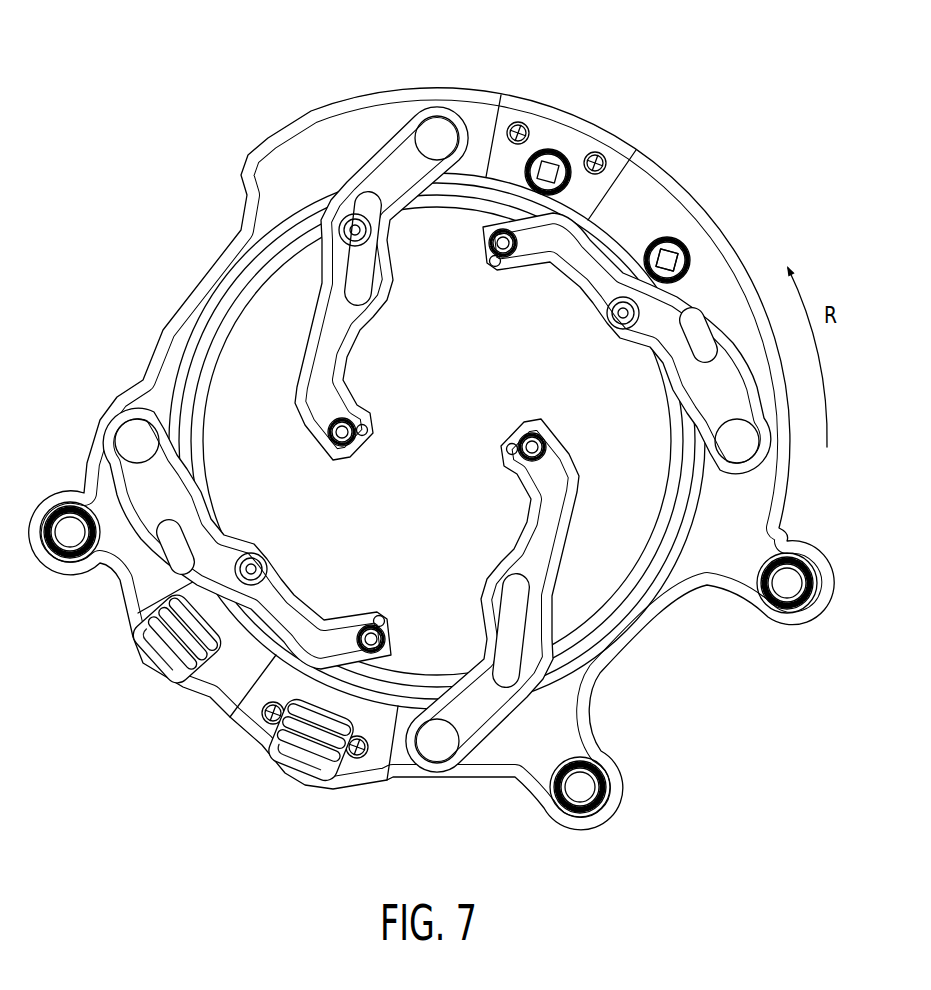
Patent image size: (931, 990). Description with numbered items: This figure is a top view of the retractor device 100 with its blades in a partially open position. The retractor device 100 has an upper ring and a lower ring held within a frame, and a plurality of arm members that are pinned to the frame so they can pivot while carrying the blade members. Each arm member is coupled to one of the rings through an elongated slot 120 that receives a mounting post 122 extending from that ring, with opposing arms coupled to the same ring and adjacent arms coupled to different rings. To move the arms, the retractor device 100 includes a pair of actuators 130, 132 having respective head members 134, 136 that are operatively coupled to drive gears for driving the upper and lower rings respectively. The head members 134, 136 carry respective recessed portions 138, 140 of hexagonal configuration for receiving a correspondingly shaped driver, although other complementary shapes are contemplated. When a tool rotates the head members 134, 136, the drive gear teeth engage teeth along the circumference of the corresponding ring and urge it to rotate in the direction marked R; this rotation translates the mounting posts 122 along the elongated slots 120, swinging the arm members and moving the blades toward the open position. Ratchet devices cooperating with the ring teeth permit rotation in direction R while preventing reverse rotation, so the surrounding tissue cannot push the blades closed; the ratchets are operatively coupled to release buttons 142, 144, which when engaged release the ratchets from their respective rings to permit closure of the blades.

The retractor device 100 is at (152, 73).
The elongated slot 120 is at (343, 273).
The mounting post 122 is at (357, 226).
The actuator 130 is at (558, 142).
The actuator 132 is at (697, 255).
The head member 134 is at (567, 158).
The head member 136 is at (665, 243).
The recessed portion 138 is at (527, 165).
The recessed portion 140 is at (688, 277).
The release button 142 is at (135, 665).
The release button 144 is at (290, 784).